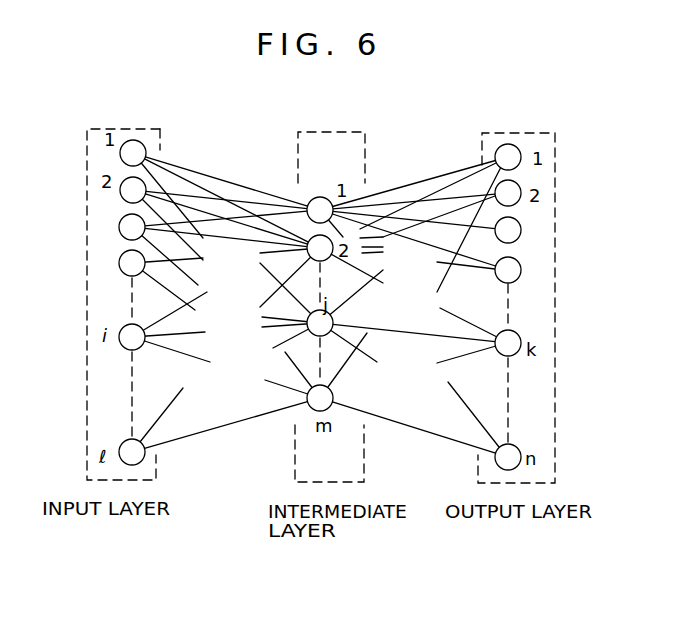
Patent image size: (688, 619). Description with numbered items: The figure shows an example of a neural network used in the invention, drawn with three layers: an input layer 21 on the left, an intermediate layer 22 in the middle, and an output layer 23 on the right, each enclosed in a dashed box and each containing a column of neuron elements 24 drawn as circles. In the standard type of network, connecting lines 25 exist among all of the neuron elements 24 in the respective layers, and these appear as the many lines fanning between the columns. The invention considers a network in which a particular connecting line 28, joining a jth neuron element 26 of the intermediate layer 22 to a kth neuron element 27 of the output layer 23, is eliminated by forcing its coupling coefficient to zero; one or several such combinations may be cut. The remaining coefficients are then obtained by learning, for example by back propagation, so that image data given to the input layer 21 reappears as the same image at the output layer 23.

The input layer 21 is at (157, 457).
The intermediate layer 22 is at (365, 458).
The output layer 23 is at (553, 463).
The neuron element 24 is at (147, 153).
The connecting line 25 is at (241, 184).
The jth neuron element 26 is at (334, 320).
The kth neuron element 27 is at (520, 336).
The connecting line 28 is at (424, 335).